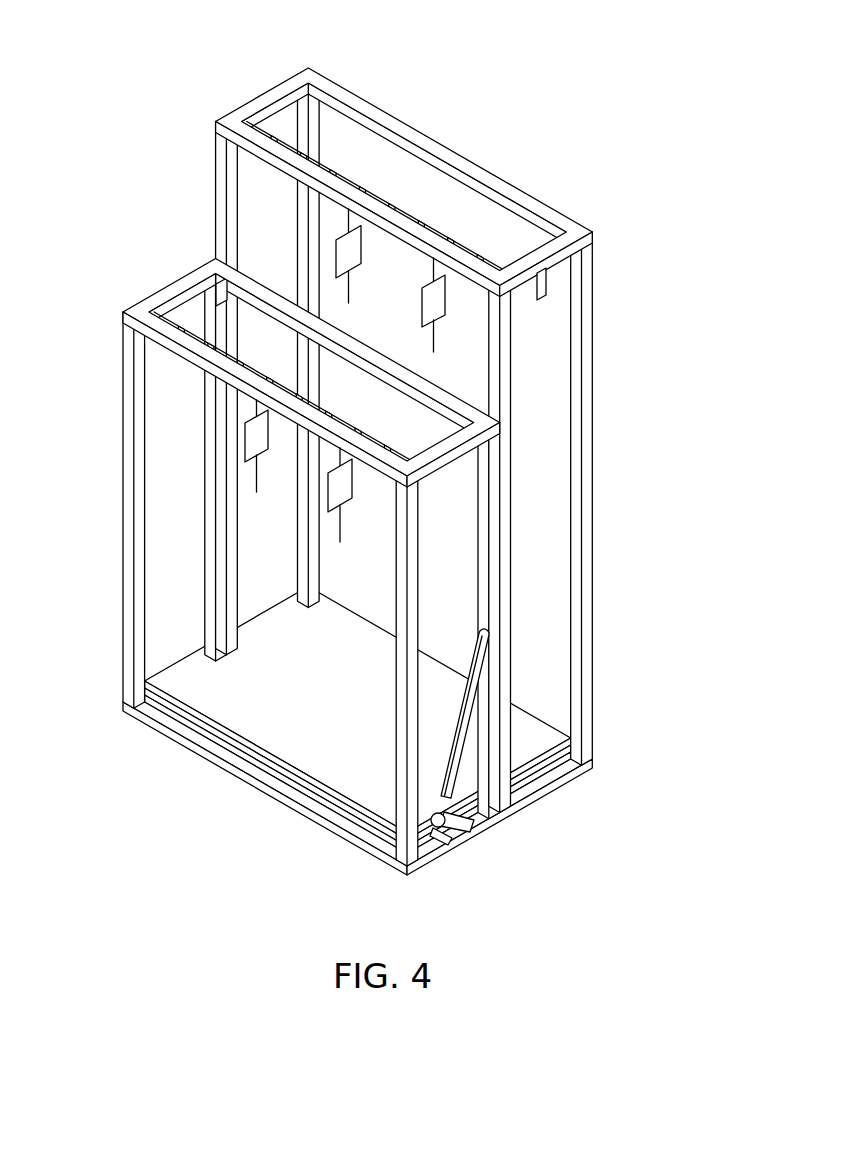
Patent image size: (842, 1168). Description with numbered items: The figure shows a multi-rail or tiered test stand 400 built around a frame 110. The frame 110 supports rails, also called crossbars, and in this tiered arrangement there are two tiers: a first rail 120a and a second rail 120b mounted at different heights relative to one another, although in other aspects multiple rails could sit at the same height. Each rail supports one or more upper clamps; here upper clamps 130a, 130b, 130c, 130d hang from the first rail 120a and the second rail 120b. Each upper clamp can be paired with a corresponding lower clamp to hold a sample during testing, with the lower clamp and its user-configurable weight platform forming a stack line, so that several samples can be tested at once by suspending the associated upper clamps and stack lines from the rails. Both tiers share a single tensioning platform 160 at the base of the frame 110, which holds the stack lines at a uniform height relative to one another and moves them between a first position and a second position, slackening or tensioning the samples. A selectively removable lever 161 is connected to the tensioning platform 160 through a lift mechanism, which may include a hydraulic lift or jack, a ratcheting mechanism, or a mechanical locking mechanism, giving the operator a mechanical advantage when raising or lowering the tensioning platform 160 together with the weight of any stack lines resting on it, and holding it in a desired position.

The tiered test stand 400 is at (143, 64).
The frame 110 is at (216, 175).
The first rail 120a is at (475, 207).
The second rail 120b is at (187, 312).
The upper clamp 130a is at (336, 255).
The upper clamp 130b is at (447, 300).
The upper clamp 130c is at (245, 440).
The upper clamp 130d is at (355, 487).
The tensioning platform 160 is at (292, 676).
The lever 161 is at (462, 705).